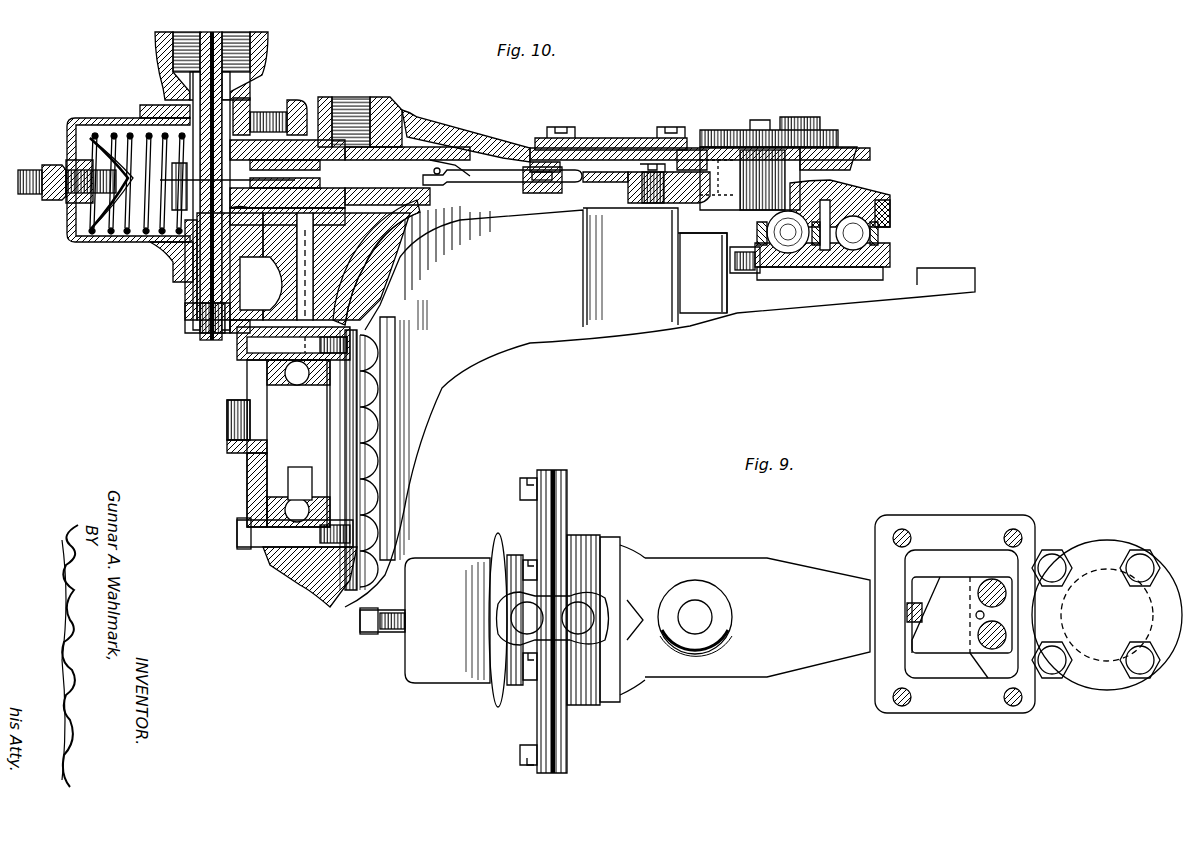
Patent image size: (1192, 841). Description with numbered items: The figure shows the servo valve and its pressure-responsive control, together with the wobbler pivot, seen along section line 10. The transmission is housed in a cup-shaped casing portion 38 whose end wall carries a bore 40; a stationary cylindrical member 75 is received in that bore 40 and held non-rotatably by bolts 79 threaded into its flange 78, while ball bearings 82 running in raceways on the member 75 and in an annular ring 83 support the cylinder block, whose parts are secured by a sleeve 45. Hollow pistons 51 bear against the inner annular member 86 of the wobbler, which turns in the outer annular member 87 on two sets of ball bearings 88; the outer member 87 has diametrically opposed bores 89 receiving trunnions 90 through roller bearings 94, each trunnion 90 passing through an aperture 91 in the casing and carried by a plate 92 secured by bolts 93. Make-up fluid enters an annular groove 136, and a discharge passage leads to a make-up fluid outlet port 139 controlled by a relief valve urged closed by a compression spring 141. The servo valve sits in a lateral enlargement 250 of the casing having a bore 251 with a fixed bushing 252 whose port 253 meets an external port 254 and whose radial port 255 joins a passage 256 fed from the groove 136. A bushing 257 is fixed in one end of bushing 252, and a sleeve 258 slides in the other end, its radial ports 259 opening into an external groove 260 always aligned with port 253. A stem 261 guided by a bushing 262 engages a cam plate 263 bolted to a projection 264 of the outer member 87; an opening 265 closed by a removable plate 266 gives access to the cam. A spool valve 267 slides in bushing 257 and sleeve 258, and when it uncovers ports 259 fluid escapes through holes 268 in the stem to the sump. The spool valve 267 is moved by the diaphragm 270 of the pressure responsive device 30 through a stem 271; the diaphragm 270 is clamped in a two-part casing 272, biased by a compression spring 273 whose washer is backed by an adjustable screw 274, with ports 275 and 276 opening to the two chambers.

In FIG. 9, the gear pump unit 10 is at (320, 622).
In FIG. 10, the pressure responsive device 30 is at (158, 316).
In FIG. 10, the casing portion 38 is at (852, 150).
In FIG. 10, the bore 40 is at (248, 490).
In FIG. 10, the sleeve 45 is at (495, 302).
In FIG. 10, the piston 51 is at (745, 270).
In FIG. 10, the cylindrical member 75 is at (305, 425).
In FIG. 10, the flange 78 is at (340, 428).
In FIG. 10, the bolts 79 is at (237, 538).
In FIG. 10, the ball bearings 82 is at (375, 395).
In FIG. 10, the annular ring 83 is at (395, 340).
In FIG. 10, the inner annular member 86 is at (855, 250).
In FIG. 10, the outer annular member 87 is at (865, 190).
In FIG. 10, the ball bearings 88 is at (818, 248).
In FIG. 10, the bores 89 is at (712, 203).
In FIG. 10, the trunnions 90 is at (835, 185).
In FIG. 10, the aperture 91 is at (820, 147).
In FIG. 9, the aperture 91 is at (1097, 658).
In FIG. 10, the plate 92 is at (752, 130).
In FIG. 9, the plate 92 is at (1110, 690).
In FIG. 10, the bolts 93 is at (805, 117).
In FIG. 9, the bolts 93 is at (1132, 560).
In FIG. 10, the roller bearings 94 is at (738, 180).
In FIG. 10, the annular groove 136 is at (237, 378).
In FIG. 10, the make-up fluid outlet port 139 is at (227, 443).
In FIG. 10, the compression spring 141 is at (227, 405).
In FIG. 10, the lateral enlargement 250 is at (485, 145).
In FIG. 9, the lateral enlargement 250 is at (755, 677).
In FIG. 10, the bore 251 is at (440, 128).
In FIG. 10, the bushing 252 is at (345, 108).
In FIG. 10, the port 253 is at (405, 135).
In FIG. 10, the external port 254 is at (372, 100).
In FIG. 9, the external port 254 is at (700, 612).
In FIG. 10, the radial port 255 is at (325, 270).
In FIG. 10, the passage 256 is at (310, 290).
In FIG. 10, the bushing 257 is at (310, 108).
In FIG. 10, the sleeve 258 is at (418, 203).
In FIG. 10, the radial ports 259 is at (335, 250).
In FIG. 10, the external groove 260 is at (390, 225).
In FIG. 10, the stem 261 is at (505, 165).
In FIG. 9, the stem 261 is at (907, 612).
In FIG. 10, the bushing 262 is at (545, 193).
In FIG. 10, the cam plate 263 is at (608, 182).
In FIG. 9, the cam plate 263 is at (950, 650).
In FIG. 10, the projection 264 is at (660, 203).
In FIG. 9, the projection 264 is at (975, 577).
In FIG. 10, the opening 265 is at (650, 150).
In FIG. 9, the opening 265 is at (942, 557).
In FIG. 10, the removable plate 266 is at (595, 138).
In FIG. 10, the spool valve 267 is at (328, 110).
In FIG. 10, the holes 268 is at (420, 160).
In FIG. 10, the diaphragm 270 is at (175, 226).
In FIG. 10, the stem 271 is at (185, 290).
In FIG. 10, the two-part casing 272 is at (200, 333).
In FIG. 9, the two-part casing 272 is at (540, 768).
In FIG. 10, the compression spring 273 is at (100, 128).
In FIG. 10, the screw 274 is at (68, 200).
In FIG. 9, the screw 274 is at (378, 635).
In FIG. 10, the port 275 is at (248, 32).
In FIG. 9, the port 275 is at (598, 610).
In FIG. 10, the port 276 is at (172, 30).
In FIG. 9, the port 276 is at (512, 613).